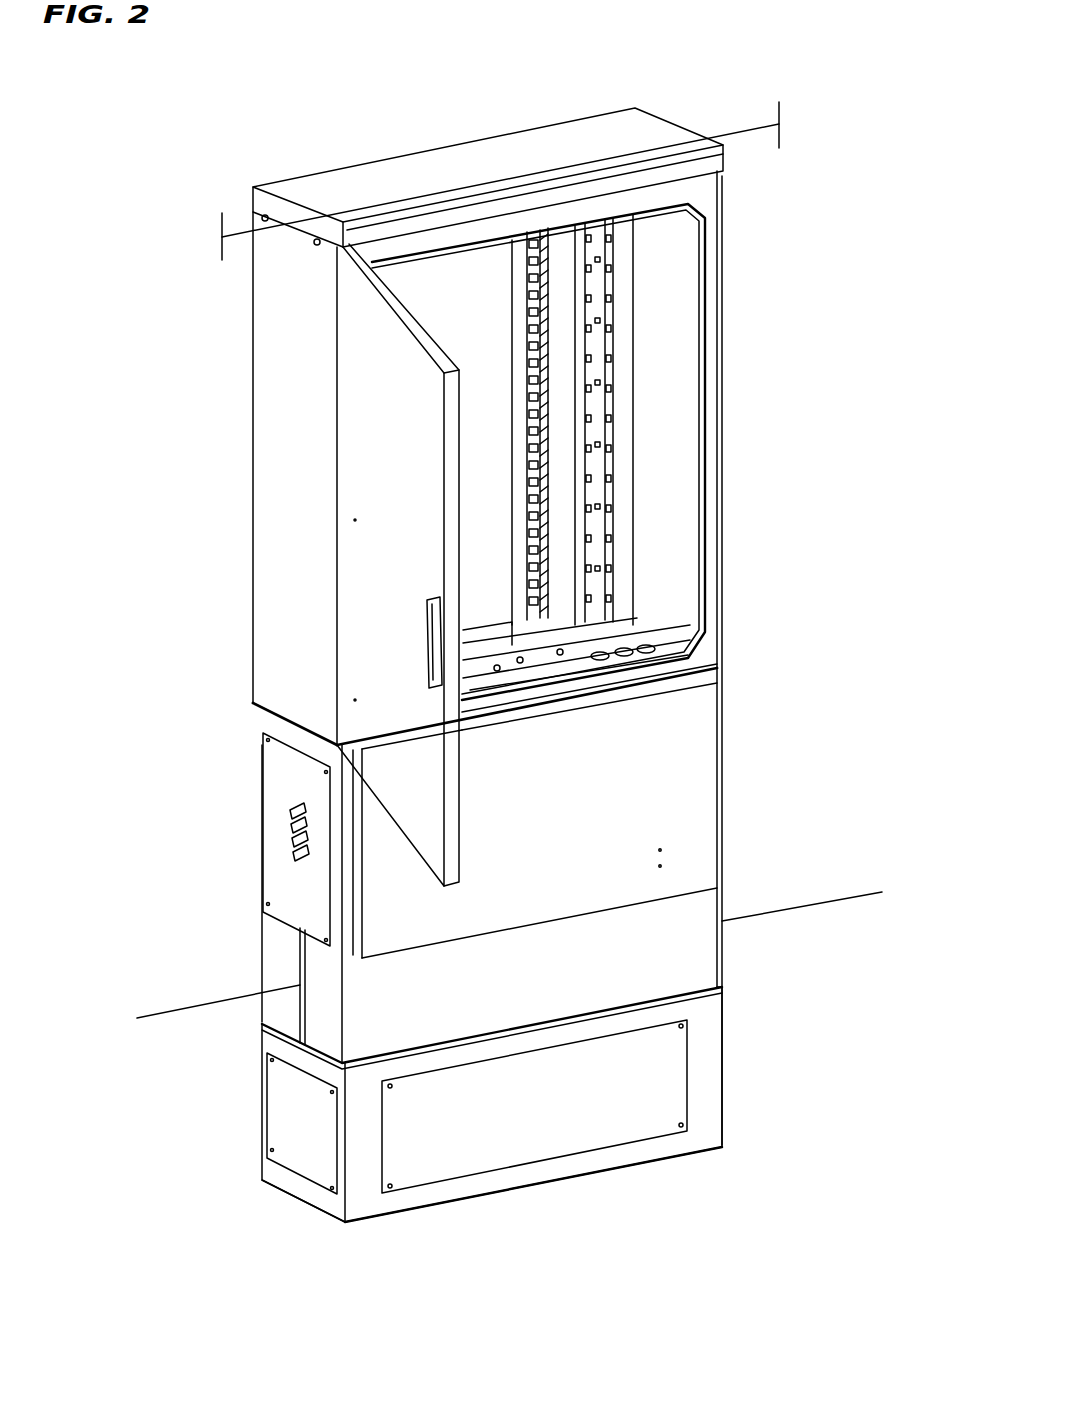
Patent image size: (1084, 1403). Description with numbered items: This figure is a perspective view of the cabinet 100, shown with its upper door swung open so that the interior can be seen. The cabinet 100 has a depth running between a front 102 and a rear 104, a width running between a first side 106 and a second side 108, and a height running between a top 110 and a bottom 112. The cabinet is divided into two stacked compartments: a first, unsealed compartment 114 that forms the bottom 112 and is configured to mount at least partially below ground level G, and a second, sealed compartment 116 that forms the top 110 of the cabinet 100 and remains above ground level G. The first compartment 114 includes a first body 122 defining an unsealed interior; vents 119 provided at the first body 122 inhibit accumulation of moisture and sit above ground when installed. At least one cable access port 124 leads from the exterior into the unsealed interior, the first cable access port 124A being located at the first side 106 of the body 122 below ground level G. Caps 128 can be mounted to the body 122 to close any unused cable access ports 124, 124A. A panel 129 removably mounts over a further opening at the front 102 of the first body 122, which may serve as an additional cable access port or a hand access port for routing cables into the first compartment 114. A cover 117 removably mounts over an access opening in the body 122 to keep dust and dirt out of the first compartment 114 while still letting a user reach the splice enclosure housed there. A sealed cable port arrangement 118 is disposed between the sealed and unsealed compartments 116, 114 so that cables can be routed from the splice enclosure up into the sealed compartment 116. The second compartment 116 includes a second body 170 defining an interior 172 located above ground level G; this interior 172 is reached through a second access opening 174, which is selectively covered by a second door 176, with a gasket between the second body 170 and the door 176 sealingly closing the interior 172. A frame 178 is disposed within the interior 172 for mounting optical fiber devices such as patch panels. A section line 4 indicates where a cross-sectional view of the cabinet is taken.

The cabinet 100 is at (757, 245).
The front 102 is at (657, 763).
The rear 104 is at (262, 722).
The first side 106 is at (298, 537).
The second side 108 is at (718, 470).
The top 110 is at (475, 166).
The bottom 112 is at (535, 1185).
The first compartment 114 is at (260, 955).
The second compartment 116 is at (254, 439).
The cover 117 is at (472, 844).
The sealed cable port arrangement 118 is at (627, 650).
The vents 119 is at (302, 840).
The first body 122 is at (702, 1063).
The cable access port 124 is at (283, 1172).
The first cable access port 124A is at (286, 1169).
The caps 128 is at (290, 1117).
The panel 129 is at (618, 1093).
The second body 170 is at (266, 337).
The interior 172 is at (658, 372).
The second access opening 174 is at (710, 317).
The second door 176 is at (388, 582).
The frame 178 is at (535, 285).
The section line 4- 4 is at (781, 127).
The ground level G is at (830, 900).